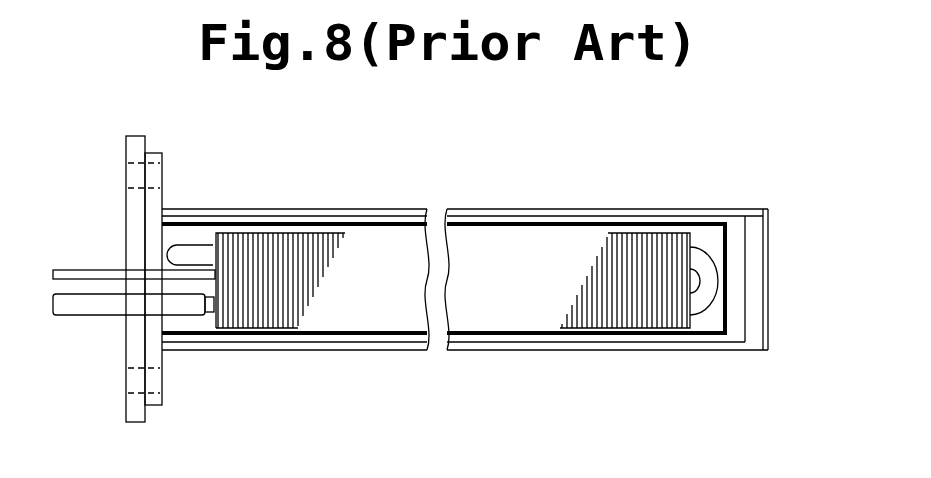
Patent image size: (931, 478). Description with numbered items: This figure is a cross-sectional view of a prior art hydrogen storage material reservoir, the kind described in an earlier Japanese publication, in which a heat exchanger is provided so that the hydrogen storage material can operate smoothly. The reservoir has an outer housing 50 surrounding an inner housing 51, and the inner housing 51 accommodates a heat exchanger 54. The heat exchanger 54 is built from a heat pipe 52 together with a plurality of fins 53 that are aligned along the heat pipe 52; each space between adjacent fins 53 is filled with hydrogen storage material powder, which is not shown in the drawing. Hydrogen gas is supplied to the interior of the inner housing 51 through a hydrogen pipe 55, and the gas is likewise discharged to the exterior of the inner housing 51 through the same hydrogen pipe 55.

The outer housing 50 is at (512, 208).
The inner housing 51 is at (187, 223).
The heat pipe 52 is at (211, 312).
The fins 53 is at (658, 245).
The heat exchanger 54 is at (697, 238).
The hydrogen pipe 55 is at (83, 268).